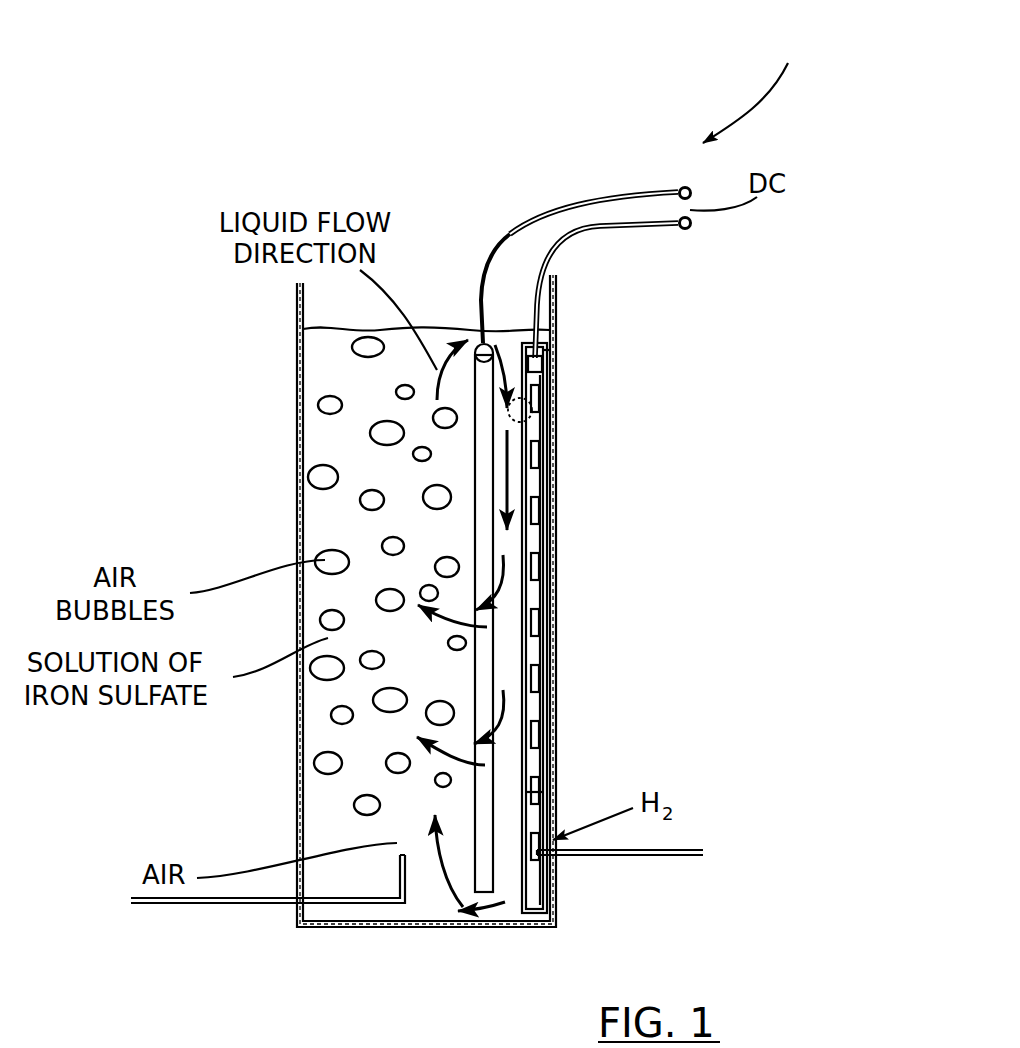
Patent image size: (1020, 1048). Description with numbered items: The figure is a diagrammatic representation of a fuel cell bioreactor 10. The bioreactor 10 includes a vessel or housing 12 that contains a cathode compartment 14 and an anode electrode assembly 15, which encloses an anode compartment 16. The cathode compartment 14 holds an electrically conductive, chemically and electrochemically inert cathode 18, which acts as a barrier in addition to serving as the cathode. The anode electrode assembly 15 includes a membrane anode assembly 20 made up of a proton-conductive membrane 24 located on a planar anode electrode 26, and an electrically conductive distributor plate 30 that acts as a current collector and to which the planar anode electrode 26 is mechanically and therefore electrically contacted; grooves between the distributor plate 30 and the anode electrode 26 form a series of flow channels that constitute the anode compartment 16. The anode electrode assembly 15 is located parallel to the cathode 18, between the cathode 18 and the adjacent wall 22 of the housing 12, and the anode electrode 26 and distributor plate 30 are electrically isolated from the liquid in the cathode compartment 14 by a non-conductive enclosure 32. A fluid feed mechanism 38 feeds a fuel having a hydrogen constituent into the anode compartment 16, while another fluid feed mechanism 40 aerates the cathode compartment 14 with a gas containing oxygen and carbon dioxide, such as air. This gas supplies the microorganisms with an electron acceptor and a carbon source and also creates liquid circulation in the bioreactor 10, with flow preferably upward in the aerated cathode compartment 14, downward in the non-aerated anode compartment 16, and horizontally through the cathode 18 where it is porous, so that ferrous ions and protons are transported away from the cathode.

The fuel cell bioreactor 10 is at (758, 87).
The vessel 12 is at (555, 705).
The cathode compartment 14 is at (355, 455).
The anode electrode assembly 15 is at (514, 335).
The anode compartment 16 is at (535, 569).
The cathode 18 is at (473, 523).
The membrane anode assembly 20 is at (532, 410).
The adjacent wall 22 is at (540, 275).
The membrane 24 is at (520, 903).
The planar anode electrode 26 is at (522, 792).
The distributor plate 30 is at (537, 770).
The non-conductive enclosure 32 is at (548, 350).
The fluid feed mechanism 38 is at (613, 855).
The fluid feed mechanism 40 is at (218, 903).